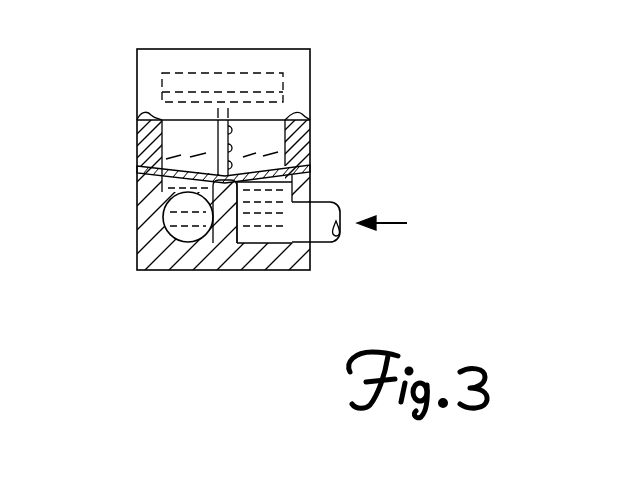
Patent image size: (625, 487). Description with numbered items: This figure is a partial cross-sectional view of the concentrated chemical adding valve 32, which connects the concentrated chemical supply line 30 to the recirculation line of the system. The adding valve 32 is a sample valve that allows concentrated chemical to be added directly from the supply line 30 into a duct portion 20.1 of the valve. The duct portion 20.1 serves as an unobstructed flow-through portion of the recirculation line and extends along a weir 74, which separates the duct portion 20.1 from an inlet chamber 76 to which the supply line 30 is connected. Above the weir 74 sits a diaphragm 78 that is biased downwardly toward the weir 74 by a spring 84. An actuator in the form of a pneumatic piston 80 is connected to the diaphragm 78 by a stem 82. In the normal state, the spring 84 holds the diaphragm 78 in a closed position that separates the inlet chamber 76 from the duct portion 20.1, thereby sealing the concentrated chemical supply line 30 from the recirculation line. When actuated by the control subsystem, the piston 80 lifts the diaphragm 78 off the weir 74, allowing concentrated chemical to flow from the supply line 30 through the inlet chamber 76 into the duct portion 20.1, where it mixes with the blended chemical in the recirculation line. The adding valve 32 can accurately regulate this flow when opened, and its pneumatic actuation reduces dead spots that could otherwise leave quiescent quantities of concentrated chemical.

The duct portion 20.1 is at (166, 205).
The concentrated chemical supply line 30 is at (325, 205).
The concentrated chemical adding valve 32 is at (336, 56).
The weir 74 is at (224, 207).
The inlet chamber 76 is at (268, 230).
The diaphragm 78 is at (258, 168).
The pneumatic piston 80 is at (247, 100).
The stem 82 is at (213, 147).
The spring 84 is at (213, 128).